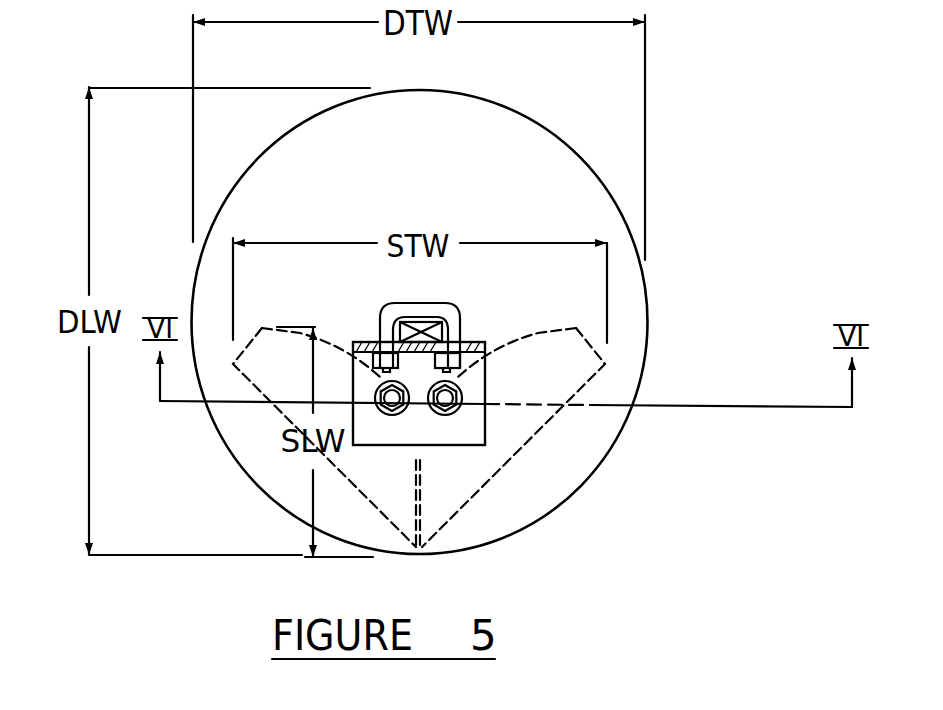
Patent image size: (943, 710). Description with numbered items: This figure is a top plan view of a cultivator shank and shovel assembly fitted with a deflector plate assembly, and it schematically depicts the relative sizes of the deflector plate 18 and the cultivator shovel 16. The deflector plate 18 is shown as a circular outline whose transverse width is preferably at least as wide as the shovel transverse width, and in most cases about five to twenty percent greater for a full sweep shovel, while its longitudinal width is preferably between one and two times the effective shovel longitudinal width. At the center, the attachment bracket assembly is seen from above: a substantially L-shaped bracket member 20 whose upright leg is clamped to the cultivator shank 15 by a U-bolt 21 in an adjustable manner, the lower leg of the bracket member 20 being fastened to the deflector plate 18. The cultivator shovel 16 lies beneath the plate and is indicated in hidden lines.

The deflector plate 18 is at (593, 178).
The cultivator shank 15 is at (447, 321).
The U-bolt 21 is at (463, 332).
The L-shaped bracket member 20 is at (488, 390).
The cultivator shovel 16 is at (508, 465).